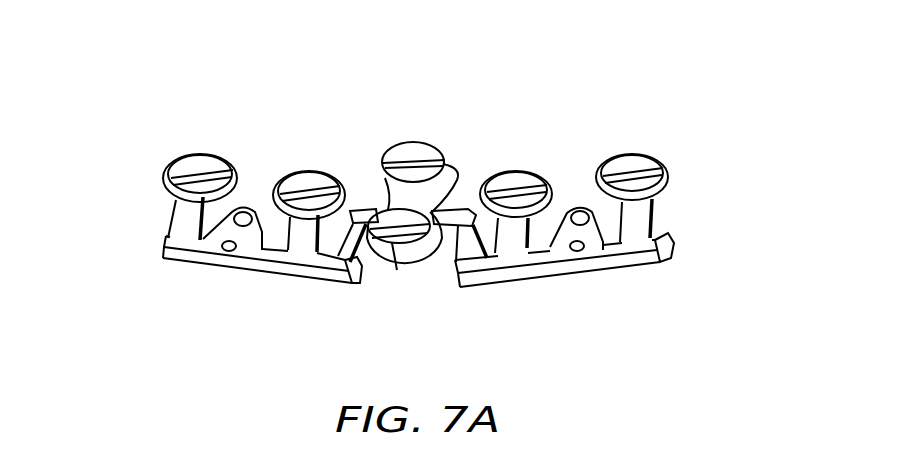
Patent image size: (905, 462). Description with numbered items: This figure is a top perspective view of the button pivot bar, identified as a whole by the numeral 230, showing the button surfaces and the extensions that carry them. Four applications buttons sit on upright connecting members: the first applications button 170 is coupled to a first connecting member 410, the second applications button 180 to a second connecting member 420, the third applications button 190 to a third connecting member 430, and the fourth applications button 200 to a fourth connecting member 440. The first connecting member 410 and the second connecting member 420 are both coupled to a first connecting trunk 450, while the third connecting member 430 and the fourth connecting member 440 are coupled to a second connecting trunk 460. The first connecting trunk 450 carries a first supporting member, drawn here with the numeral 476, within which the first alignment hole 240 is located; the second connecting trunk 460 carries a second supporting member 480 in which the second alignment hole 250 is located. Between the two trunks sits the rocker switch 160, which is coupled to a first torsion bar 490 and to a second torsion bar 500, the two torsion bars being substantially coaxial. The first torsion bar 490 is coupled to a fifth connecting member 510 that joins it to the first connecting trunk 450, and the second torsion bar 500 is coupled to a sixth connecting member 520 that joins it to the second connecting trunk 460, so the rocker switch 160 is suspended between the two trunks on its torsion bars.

The contact assembly 230 is at (460, 64).
The rocker switch 160 is at (410, 190).
The first applications button 170 is at (197, 165).
The second applications button 180 is at (314, 182).
The third applications button 190 is at (520, 185).
The fourth applications button 200 is at (645, 163).
The first alignment hole 240 is at (228, 252).
The second alignment hole 250 is at (581, 251).
The first connecting member 410 is at (187, 220).
The second connecting member 420 is at (302, 242).
The third connecting member 430 is at (515, 247).
The fourth connecting member 440 is at (633, 220).
The first connecting trunk 450 is at (200, 250).
The second connecting trunk 460 is at (580, 277).
The mounting hole 476 is at (245, 206).
The second supporting member 480 is at (575, 211).
The first torsion bar 490 is at (365, 209).
The second torsion bar 500 is at (459, 211).
The fifth connecting member 510 is at (338, 243).
The sixth connecting member 520 is at (471, 243).